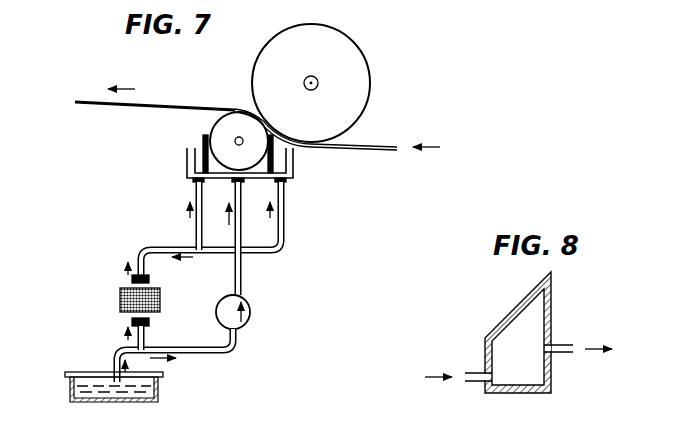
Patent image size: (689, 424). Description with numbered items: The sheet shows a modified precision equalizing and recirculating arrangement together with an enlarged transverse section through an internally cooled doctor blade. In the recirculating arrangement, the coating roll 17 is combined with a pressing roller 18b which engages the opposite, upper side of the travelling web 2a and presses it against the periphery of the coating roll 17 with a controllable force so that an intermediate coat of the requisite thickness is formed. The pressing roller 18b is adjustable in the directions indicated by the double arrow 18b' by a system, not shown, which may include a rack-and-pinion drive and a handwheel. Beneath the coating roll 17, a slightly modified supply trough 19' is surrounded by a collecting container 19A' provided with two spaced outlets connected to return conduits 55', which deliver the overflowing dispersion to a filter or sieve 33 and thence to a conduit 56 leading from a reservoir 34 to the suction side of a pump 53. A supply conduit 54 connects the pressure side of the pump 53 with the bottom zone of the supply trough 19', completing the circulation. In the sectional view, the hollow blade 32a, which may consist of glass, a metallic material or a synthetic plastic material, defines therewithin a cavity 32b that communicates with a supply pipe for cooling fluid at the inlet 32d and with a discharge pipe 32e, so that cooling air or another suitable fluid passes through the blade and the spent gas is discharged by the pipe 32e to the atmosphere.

In FIG. 7, the travelling web 2a is at (165, 104).
In FIG. 7, the coating roll 17 is at (212, 125).
In FIG. 7, the pressing roller 18b is at (333, 83).
In FIG. 7, the double arrow 18b' is at (265, 36).
In FIG. 7, the collecting container 19A' is at (213, 158).
In FIG. 7, the supply trough 19' is at (258, 201).
In FIG. 7, the return conduits 55' is at (236, 228).
In FIG. 7, the supply conduit 54 is at (241, 276).
In FIG. 7, the pump 53 is at (250, 318).
In FIG. 7, the filter or sieve 33 is at (120, 300).
In FIG. 7, the conduit 56 is at (200, 353).
In FIG. 7, the reservoir 34 is at (160, 390).
In FIG. 8, the hollow blade 32a is at (510, 318).
In FIG. 8, the cavity 32b is at (542, 312).
In FIG. 8, the inlet 32d is at (484, 372).
In FIG. 8, the discharge pipe 32e is at (566, 345).